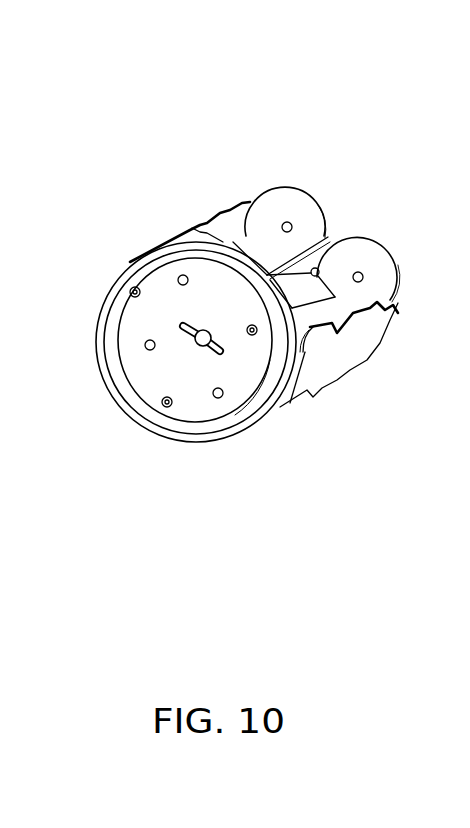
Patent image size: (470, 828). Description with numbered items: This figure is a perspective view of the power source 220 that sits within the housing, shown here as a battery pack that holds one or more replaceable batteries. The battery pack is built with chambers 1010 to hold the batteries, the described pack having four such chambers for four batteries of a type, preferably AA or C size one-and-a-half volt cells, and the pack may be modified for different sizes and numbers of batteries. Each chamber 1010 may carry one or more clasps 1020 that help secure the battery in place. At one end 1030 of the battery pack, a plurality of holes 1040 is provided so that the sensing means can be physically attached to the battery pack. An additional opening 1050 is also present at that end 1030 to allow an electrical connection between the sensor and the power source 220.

The power source 220 is at (253, 109).
The chamber 1010 is at (270, 217).
The clasp 1020 is at (220, 203).
The end of the battery pack 1030 is at (190, 447).
The holes 1040 is at (178, 281).
The additional opening 1050 is at (196, 353).